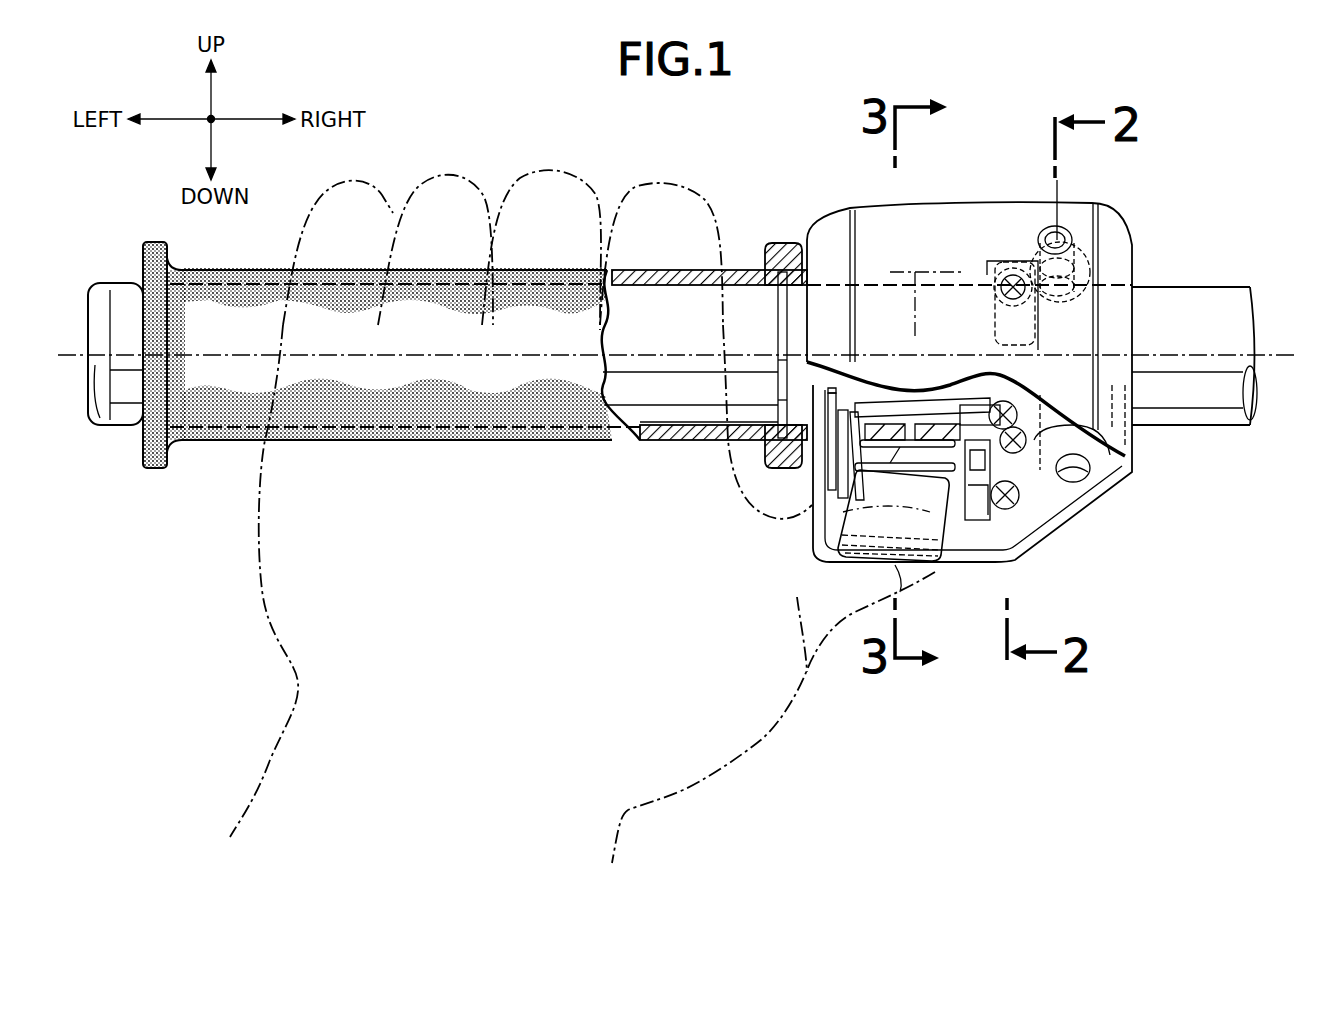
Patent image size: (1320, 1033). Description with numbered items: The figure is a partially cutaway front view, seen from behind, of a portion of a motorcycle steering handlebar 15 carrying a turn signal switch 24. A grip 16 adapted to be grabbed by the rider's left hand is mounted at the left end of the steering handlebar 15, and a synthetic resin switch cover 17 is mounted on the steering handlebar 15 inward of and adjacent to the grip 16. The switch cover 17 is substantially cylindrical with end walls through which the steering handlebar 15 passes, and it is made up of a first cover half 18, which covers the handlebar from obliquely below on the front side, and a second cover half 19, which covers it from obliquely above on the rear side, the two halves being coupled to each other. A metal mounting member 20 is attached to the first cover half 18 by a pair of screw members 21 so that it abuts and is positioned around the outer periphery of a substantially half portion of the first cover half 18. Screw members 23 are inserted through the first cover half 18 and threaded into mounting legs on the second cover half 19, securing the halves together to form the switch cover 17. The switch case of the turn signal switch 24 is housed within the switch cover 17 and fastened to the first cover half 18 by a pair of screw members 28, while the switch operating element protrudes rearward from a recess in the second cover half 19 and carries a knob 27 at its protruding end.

The steering handlebar 15 is at (1185, 298).
The grip 16 is at (228, 442).
The switch cover 17 is at (662, 455).
The first cover half 18 is at (828, 510).
The second cover half 19 is at (815, 332).
The metal mounting member 20 is at (1000, 272).
The screw member 21 is at (1010, 282).
The screw member 23 is at (1012, 288).
The turn signal switch 24 is at (903, 400).
The knob 27 is at (862, 527).
The screw member 28 is at (995, 412).